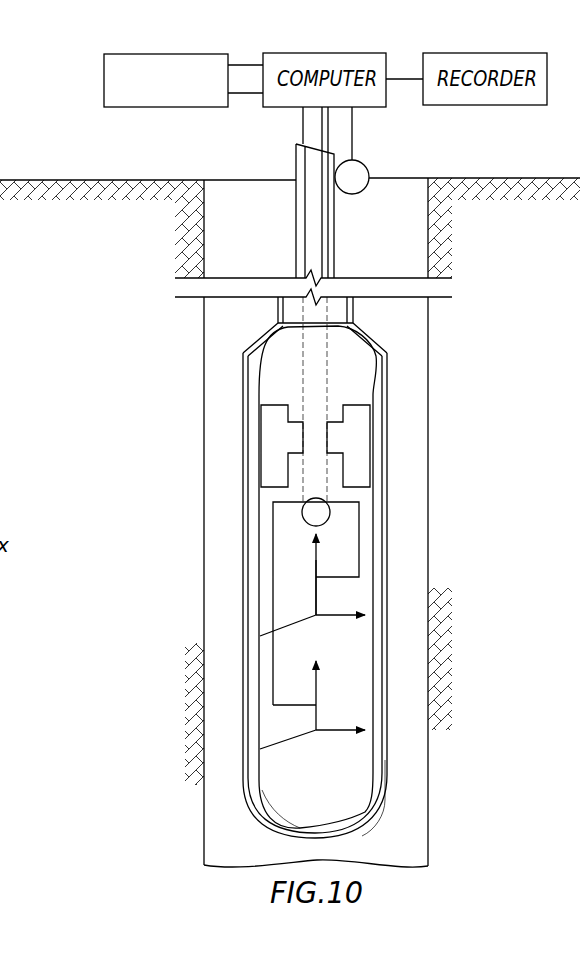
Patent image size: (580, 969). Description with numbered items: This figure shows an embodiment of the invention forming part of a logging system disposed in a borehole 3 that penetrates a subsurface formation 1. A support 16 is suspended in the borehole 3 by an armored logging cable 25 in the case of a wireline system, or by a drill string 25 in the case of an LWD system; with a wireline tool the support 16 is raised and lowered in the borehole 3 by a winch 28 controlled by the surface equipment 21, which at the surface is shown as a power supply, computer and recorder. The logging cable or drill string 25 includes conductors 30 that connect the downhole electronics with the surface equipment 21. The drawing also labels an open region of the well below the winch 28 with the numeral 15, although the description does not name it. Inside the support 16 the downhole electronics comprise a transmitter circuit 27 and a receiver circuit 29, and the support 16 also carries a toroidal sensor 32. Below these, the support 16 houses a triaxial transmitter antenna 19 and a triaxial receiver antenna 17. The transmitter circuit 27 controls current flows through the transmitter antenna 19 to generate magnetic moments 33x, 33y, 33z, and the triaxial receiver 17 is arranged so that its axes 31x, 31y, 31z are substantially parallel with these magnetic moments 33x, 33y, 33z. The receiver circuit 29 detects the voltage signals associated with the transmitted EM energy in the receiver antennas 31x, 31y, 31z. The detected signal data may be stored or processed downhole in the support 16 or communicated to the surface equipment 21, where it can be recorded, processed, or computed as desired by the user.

The surface equipment 21 is at (103, 72).
The conductors 30 is at (312, 131).
The armored logging cable 25 is at (308, 167).
The winch 28 is at (360, 162).
The borehole 15 is at (387, 217).
The borehole 3 is at (242, 227).
The subsurface formation 1 is at (80, 282).
The support 16 is at (250, 352).
The transmitter circuit 27 is at (273, 443).
The receiver circuit 29 is at (360, 445).
The toroidal sensor 32 is at (330, 513).
The triaxial transmitter antenna 19 is at (301, 596).
The z magnetic moment of the triaxial transmitter 33z is at (317, 562).
The x magnetic moment of the triaxial transmitter 33x is at (343, 615).
The y magnetic moment of the triaxial transmitter 33y is at (281, 628).
The z axis of the triaxial receiver 31z is at (317, 693).
The x axis of the triaxial receiver 31x is at (347, 735).
The y axis of the triaxial receiver 31y is at (266, 747).
The triaxial receiver antenna 17 is at (323, 743).